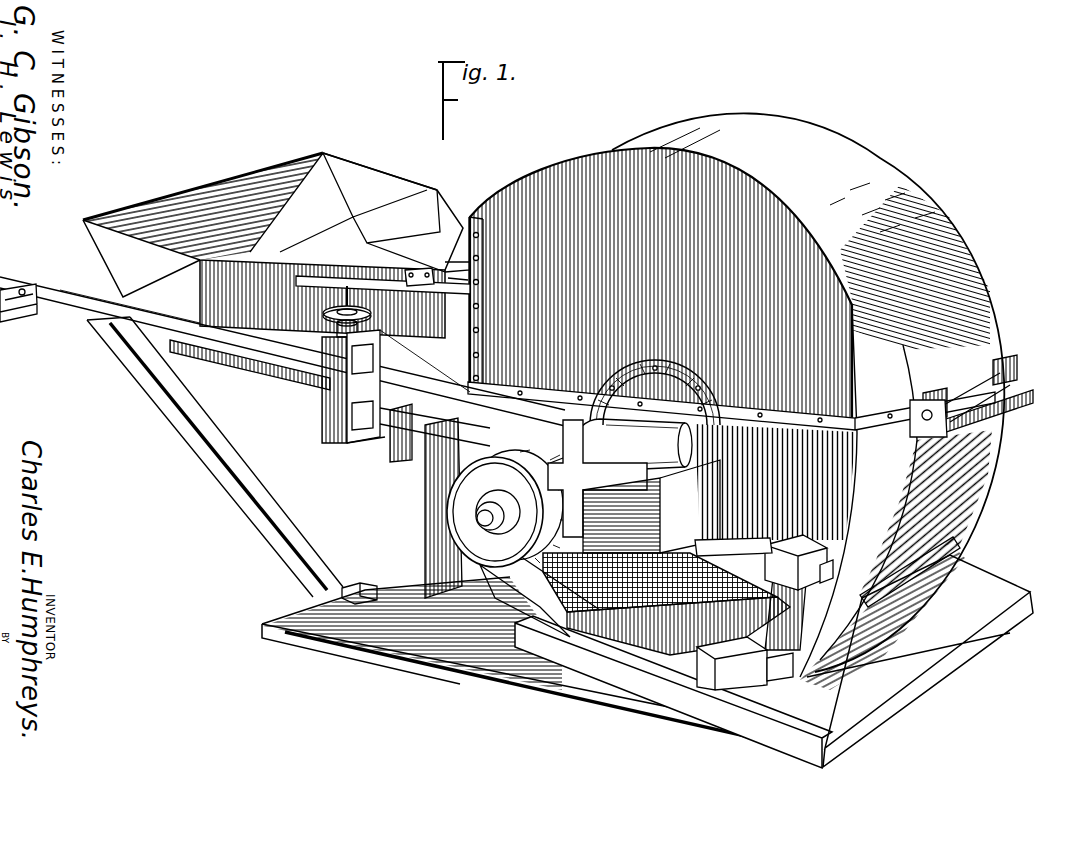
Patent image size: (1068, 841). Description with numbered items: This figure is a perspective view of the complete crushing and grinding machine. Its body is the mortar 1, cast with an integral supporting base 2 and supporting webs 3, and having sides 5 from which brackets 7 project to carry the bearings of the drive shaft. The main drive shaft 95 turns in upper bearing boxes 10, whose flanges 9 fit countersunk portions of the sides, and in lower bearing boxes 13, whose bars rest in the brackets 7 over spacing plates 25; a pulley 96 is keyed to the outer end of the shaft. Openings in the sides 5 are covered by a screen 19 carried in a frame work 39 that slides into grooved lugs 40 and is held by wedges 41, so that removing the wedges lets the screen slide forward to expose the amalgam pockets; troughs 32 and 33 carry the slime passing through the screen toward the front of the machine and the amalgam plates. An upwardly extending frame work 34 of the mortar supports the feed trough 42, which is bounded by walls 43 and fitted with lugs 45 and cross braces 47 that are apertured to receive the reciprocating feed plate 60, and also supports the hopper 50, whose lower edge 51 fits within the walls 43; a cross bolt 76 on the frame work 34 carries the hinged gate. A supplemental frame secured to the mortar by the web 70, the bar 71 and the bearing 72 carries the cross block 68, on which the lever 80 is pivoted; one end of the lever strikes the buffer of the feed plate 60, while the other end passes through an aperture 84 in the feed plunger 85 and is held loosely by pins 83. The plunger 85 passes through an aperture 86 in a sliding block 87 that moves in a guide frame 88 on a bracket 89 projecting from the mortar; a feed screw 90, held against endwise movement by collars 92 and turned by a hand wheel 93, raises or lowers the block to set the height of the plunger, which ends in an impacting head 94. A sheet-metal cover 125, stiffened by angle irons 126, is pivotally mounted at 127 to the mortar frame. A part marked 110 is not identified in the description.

The mortar 1 is at (977, 478).
The supporting base 2 is at (433, 657).
The supporting webs 3 is at (423, 543).
The sides of the mortar 5 is at (662, 344).
The brackets 7 is at (690, 506).
The flanges 9 is at (688, 384).
The upper bearing boxes 10 is at (621, 452).
The lower bearing boxes 13 is at (712, 452).
The screen 19 is at (660, 582).
The spacing plates 25 is at (621, 515).
The trough 32 is at (656, 660).
The trough 33 is at (948, 597).
The upwardly extending frame work 34 is at (468, 283).
The frame work 39 is at (786, 605).
The grooved lugs 40 is at (795, 538).
The wedges 41 is at (740, 542).
The feed trough 42 is at (241, 345).
The walls 43 is at (396, 231).
The lugs 45 is at (438, 266).
The cross braces 47 is at (290, 262).
The hopper 50 is at (283, 170).
The lower edge 51 is at (381, 220).
The reciprocating feed plate 60 is at (358, 241).
The cross block 68 is at (104, 318).
The web 70 is at (363, 583).
The bar 71 is at (390, 428).
The bearing 72 is at (425, 446).
The cross bolt 76 is at (419, 285).
The lever 80 is at (66, 277).
The pins 83 is at (22, 289).
The aperture 84 is at (28, 304).
The feed plunger 85 is at (290, 373).
The aperture 86 is at (366, 446).
The sliding block 87 is at (323, 411).
The guide frame 88 is at (323, 378).
The bracket 89 is at (425, 361).
The feed screw 90 is at (383, 294).
The collars 92 is at (323, 316).
The hand wheel 93 is at (350, 289).
The impacting head 94 is at (562, 392).
The main drive shaft 95 is at (441, 508).
The pulley 96 is at (507, 508).
The trough 110 is at (678, 611).
The cover 125 is at (862, 156).
The angle irons 126 is at (648, 362).
The pivotal mounting 127 is at (997, 422).